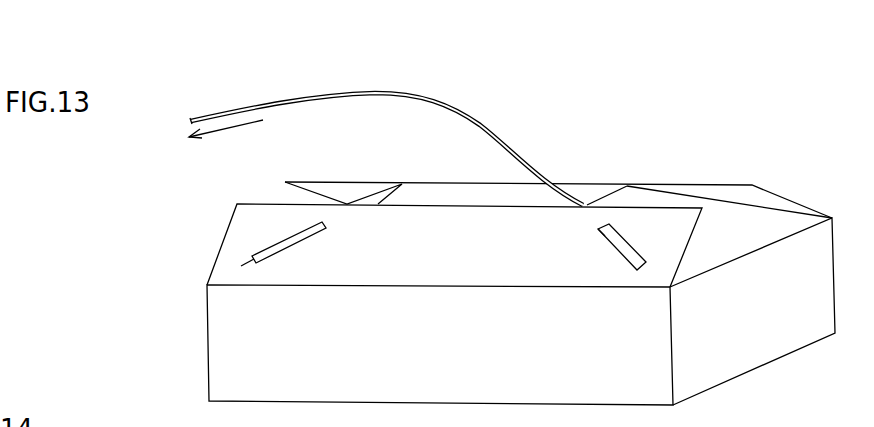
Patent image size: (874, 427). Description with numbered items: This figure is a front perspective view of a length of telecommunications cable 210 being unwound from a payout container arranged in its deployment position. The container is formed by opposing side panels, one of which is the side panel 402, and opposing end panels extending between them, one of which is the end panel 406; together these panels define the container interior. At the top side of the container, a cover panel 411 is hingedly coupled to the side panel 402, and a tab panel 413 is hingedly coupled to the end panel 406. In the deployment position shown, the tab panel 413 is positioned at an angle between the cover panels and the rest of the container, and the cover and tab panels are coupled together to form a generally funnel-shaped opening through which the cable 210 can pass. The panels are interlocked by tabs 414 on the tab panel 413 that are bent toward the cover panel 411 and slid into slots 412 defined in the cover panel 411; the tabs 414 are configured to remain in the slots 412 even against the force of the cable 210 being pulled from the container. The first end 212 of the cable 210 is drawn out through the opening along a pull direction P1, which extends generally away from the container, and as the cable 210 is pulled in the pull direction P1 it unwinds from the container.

The telecommunications cable 210 is at (460, 102).
The first end 212 is at (212, 119).
The pull direction P1 is at (241, 125).
The side panel 402 is at (459, 338).
The end panel 406 is at (782, 305).
The cover panel 411 is at (465, 237).
The slot 412 is at (297, 241).
The tab panel 413 is at (746, 232).
The tab 414 is at (268, 248).